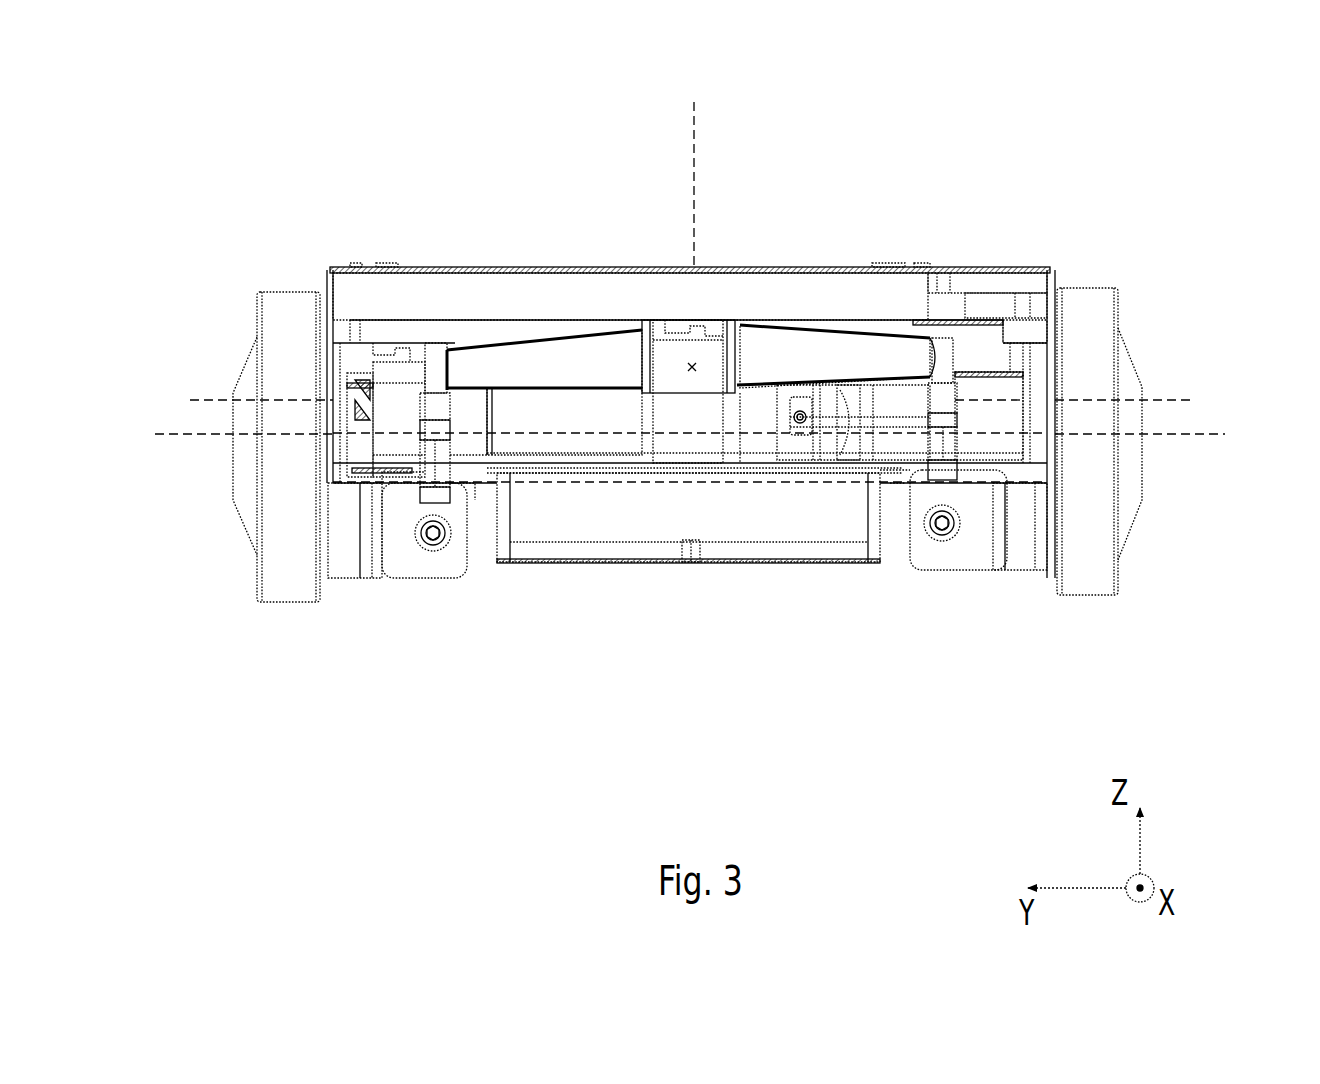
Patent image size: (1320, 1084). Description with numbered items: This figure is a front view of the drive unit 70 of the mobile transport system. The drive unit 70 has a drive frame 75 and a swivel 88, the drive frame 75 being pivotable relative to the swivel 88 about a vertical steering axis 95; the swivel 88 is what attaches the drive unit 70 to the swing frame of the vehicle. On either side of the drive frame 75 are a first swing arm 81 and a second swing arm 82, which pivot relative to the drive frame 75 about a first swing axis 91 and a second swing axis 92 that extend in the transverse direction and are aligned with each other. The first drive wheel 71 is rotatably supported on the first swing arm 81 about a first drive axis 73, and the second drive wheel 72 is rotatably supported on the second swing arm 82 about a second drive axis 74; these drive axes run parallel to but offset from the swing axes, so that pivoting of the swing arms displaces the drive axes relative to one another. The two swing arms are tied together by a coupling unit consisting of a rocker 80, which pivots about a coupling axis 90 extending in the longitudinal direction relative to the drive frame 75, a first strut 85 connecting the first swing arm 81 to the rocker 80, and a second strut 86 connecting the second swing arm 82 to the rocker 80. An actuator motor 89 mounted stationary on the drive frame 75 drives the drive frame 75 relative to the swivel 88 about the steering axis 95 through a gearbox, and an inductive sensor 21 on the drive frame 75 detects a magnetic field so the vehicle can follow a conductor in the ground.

The inductive sensor 21 is at (725, 564).
The drive unit 70 is at (374, 180).
The first drive wheel 71 is at (1092, 317).
The second drive wheel 72 is at (291, 317).
The first drive axis 73 is at (1215, 432).
The second drive axis 74 is at (170, 432).
The drive frame 75 is at (835, 299).
The rocker 80 is at (616, 367).
The first swing arm 81 is at (955, 555).
The second swing arm 82 is at (405, 560).
The first strut 85 is at (943, 433).
The second strut 86 is at (435, 443).
The swivel 88 is at (575, 266).
The actuator motor 89 is at (903, 443).
The coupling axis 90 is at (696, 366).
The first swing axis 91 is at (1180, 398).
The second swing axis 92 is at (204, 398).
The steering axis 95 is at (698, 143).